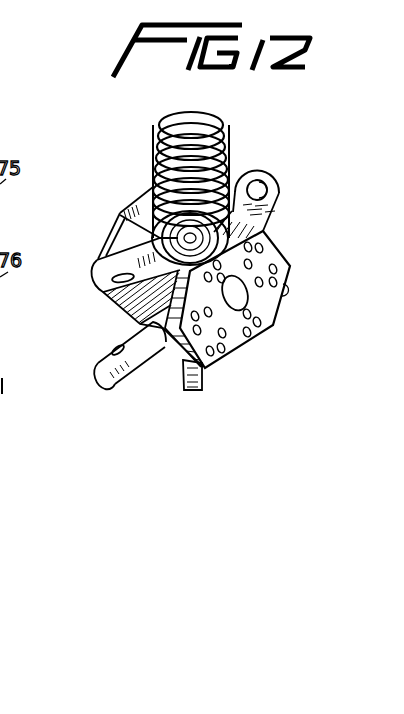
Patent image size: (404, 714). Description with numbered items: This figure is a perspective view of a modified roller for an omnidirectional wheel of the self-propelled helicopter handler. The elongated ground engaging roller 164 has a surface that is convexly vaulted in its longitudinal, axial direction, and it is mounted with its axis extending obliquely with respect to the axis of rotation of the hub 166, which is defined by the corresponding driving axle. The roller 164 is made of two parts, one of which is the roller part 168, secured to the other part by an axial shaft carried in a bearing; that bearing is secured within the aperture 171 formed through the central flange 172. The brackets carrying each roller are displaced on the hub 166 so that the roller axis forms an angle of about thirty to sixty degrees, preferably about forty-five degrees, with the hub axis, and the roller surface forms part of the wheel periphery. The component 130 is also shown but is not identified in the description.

The rod end 130 is at (147, 197).
The roller 164 is at (232, 140).
The hub 166 is at (273, 318).
The roller part 168 is at (153, 136).
The aperture 171 is at (287, 200).
The central flange 172 is at (287, 218).